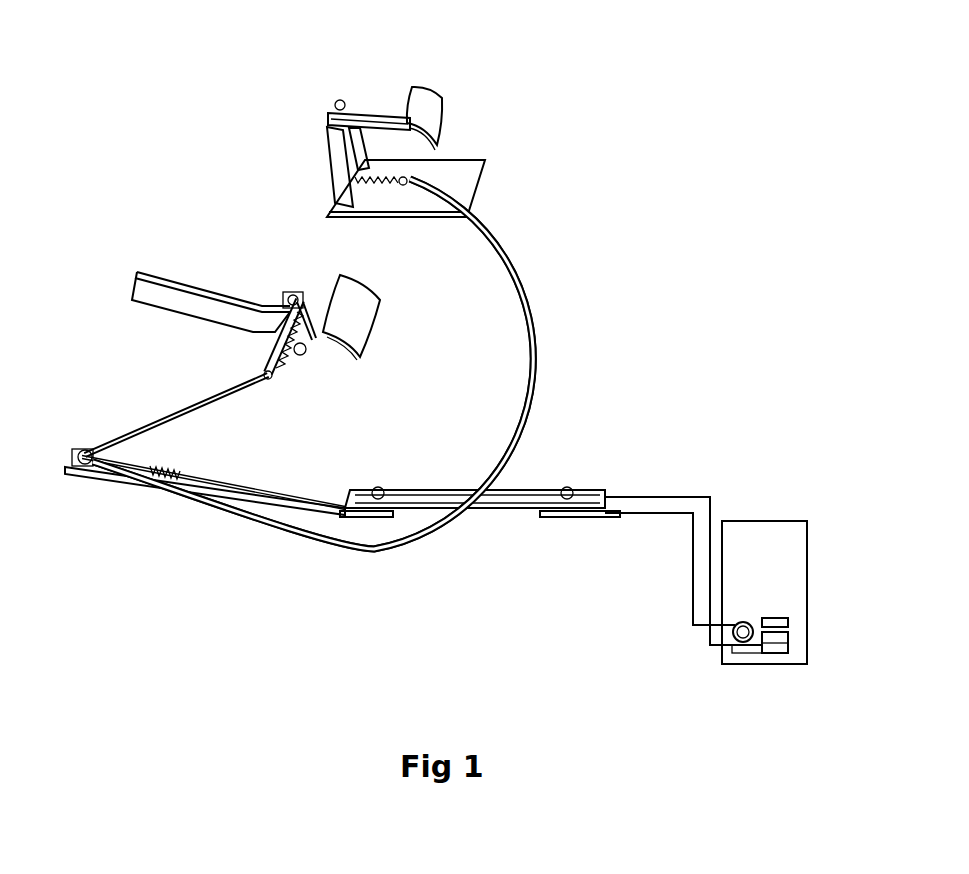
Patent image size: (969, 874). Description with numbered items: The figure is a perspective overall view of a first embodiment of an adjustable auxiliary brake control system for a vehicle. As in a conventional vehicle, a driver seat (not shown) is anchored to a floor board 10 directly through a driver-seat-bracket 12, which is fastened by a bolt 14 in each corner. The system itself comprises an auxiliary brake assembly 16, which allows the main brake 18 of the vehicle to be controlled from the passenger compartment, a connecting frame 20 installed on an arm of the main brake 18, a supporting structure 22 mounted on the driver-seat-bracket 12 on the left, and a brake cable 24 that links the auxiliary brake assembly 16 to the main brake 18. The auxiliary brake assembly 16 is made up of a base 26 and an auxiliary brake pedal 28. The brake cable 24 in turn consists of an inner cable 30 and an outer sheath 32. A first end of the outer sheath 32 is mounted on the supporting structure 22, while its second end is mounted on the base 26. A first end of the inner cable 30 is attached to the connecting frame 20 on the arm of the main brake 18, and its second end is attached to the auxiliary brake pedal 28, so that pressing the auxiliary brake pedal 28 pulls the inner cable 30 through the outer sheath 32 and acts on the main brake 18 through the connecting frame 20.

The floor board 10 is at (761, 535).
The driver-seat-bracket 12 is at (785, 620).
The bolt 14 is at (746, 622).
The auxiliary brake assembly 16 is at (470, 127).
The main brake 18 is at (207, 276).
The connecting frame 20 is at (288, 298).
The supporting structure 22 is at (592, 466).
The brake cable 24 is at (545, 300).
The base 26 is at (468, 183).
The auxiliary brake pedal 28 is at (423, 107).
The inner cable 30 is at (175, 407).
The outer sheath 32 is at (517, 415).